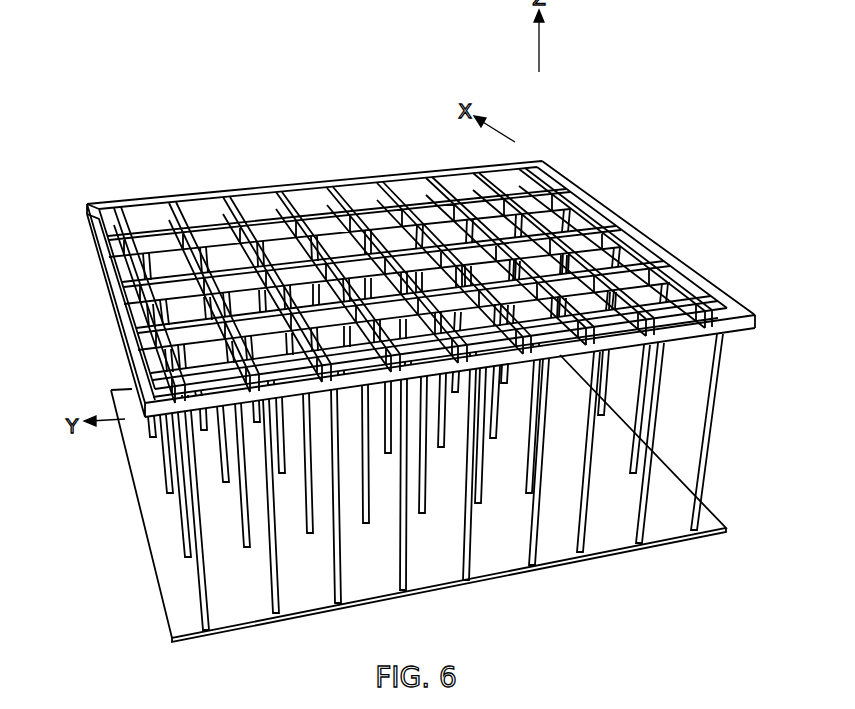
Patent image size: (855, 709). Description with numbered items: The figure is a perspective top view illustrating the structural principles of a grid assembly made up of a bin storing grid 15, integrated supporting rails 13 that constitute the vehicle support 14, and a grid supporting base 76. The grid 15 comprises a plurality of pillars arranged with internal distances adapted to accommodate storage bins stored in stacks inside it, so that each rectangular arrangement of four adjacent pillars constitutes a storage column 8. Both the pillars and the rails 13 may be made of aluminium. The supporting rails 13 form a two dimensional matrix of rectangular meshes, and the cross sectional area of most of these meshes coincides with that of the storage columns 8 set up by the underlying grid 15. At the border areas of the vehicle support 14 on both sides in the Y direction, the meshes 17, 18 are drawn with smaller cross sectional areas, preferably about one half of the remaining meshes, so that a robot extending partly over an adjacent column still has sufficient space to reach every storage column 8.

The storage column 8 is at (200, 220).
The supporting rails 13 is at (327, 195).
The vehicle support 14 is at (677, 227).
The bin storing grid 15 is at (723, 433).
The border mesh 17 is at (100, 217).
The border mesh 18 is at (636, 245).
The grid supporting base 76 is at (490, 547).